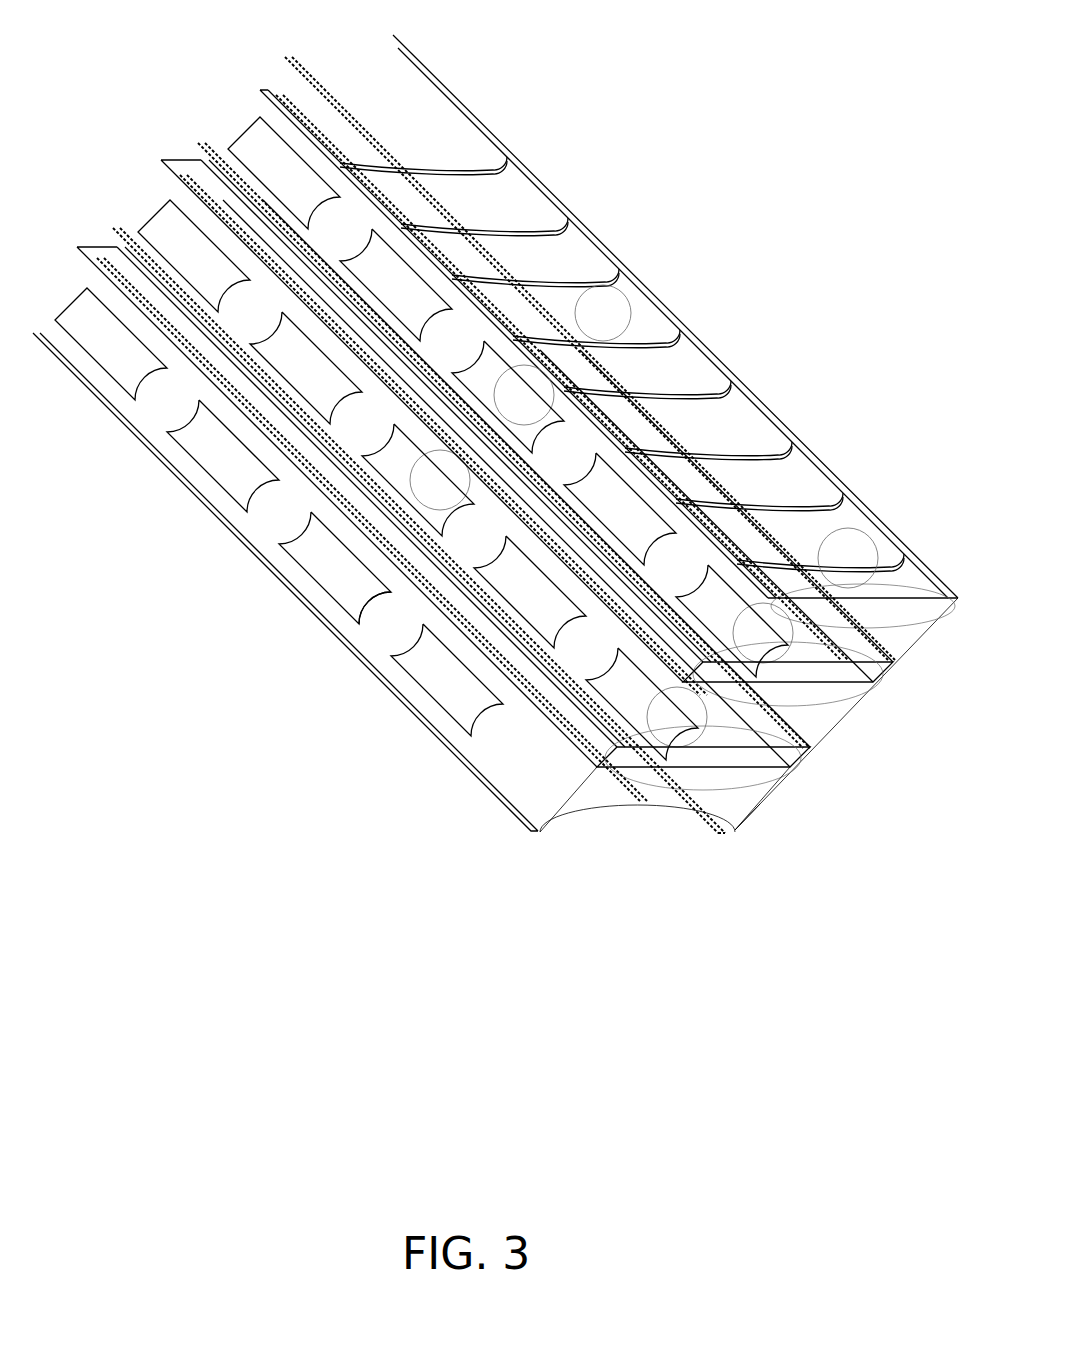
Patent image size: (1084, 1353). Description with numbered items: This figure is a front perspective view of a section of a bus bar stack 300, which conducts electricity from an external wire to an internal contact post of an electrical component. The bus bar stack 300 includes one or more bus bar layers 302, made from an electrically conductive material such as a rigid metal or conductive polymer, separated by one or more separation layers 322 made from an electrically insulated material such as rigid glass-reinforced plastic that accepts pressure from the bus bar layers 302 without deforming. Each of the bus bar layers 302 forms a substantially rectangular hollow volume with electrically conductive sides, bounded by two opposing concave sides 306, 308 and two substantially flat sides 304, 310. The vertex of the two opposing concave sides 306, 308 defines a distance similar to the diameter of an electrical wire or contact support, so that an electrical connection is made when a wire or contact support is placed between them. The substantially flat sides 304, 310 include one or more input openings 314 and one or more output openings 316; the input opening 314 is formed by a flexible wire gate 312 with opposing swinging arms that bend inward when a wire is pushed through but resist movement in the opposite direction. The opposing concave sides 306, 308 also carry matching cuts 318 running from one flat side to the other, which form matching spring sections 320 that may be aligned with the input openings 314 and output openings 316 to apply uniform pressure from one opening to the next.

The bus bar stack 300 is at (279, 989).
The bus bar layers 302 is at (753, 813).
The substantially flat side 304 is at (730, 803).
The opposing concave side 306 is at (657, 792).
The opposing concave side 308 is at (613, 810).
The substantially flat side 310 is at (532, 782).
The flexible wire gate 312 is at (455, 698).
The input opening 314 is at (400, 642).
The output opening 316 is at (612, 306).
The matching cuts 318 is at (712, 425).
The matching spring sections 320 is at (758, 446).
The separation layers 322 is at (801, 768).